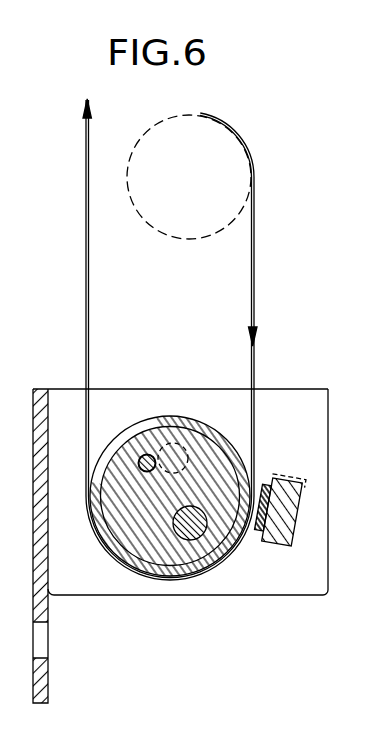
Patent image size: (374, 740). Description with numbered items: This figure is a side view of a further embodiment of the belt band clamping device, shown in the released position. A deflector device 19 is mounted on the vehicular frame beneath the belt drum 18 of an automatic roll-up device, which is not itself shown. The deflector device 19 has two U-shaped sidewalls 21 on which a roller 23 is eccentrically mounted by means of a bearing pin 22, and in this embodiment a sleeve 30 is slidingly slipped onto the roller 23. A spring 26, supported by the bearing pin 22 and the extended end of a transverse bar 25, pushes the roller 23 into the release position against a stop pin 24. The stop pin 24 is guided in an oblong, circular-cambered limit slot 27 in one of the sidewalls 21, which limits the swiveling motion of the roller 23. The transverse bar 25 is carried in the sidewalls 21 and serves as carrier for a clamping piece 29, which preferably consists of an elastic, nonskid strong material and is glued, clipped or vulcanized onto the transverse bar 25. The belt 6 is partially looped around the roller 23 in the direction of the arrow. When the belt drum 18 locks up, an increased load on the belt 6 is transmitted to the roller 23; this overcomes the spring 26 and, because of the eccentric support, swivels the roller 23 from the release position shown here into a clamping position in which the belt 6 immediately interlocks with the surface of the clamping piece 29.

The belt 6 is at (254, 284).
The belt drum 18 is at (173, 115).
The deflector device 19 is at (172, 516).
The sidewalls 21 is at (293, 400).
The bearing pin 22 is at (195, 541).
The roller 23 is at (217, 493).
The stop pin 24 is at (146, 455).
The transverse bar 25 is at (290, 505).
The spring 26 is at (170, 526).
The limit slot 27 is at (168, 446).
The clamping piece 29 is at (270, 522).
The sleeve 30 is at (231, 458).